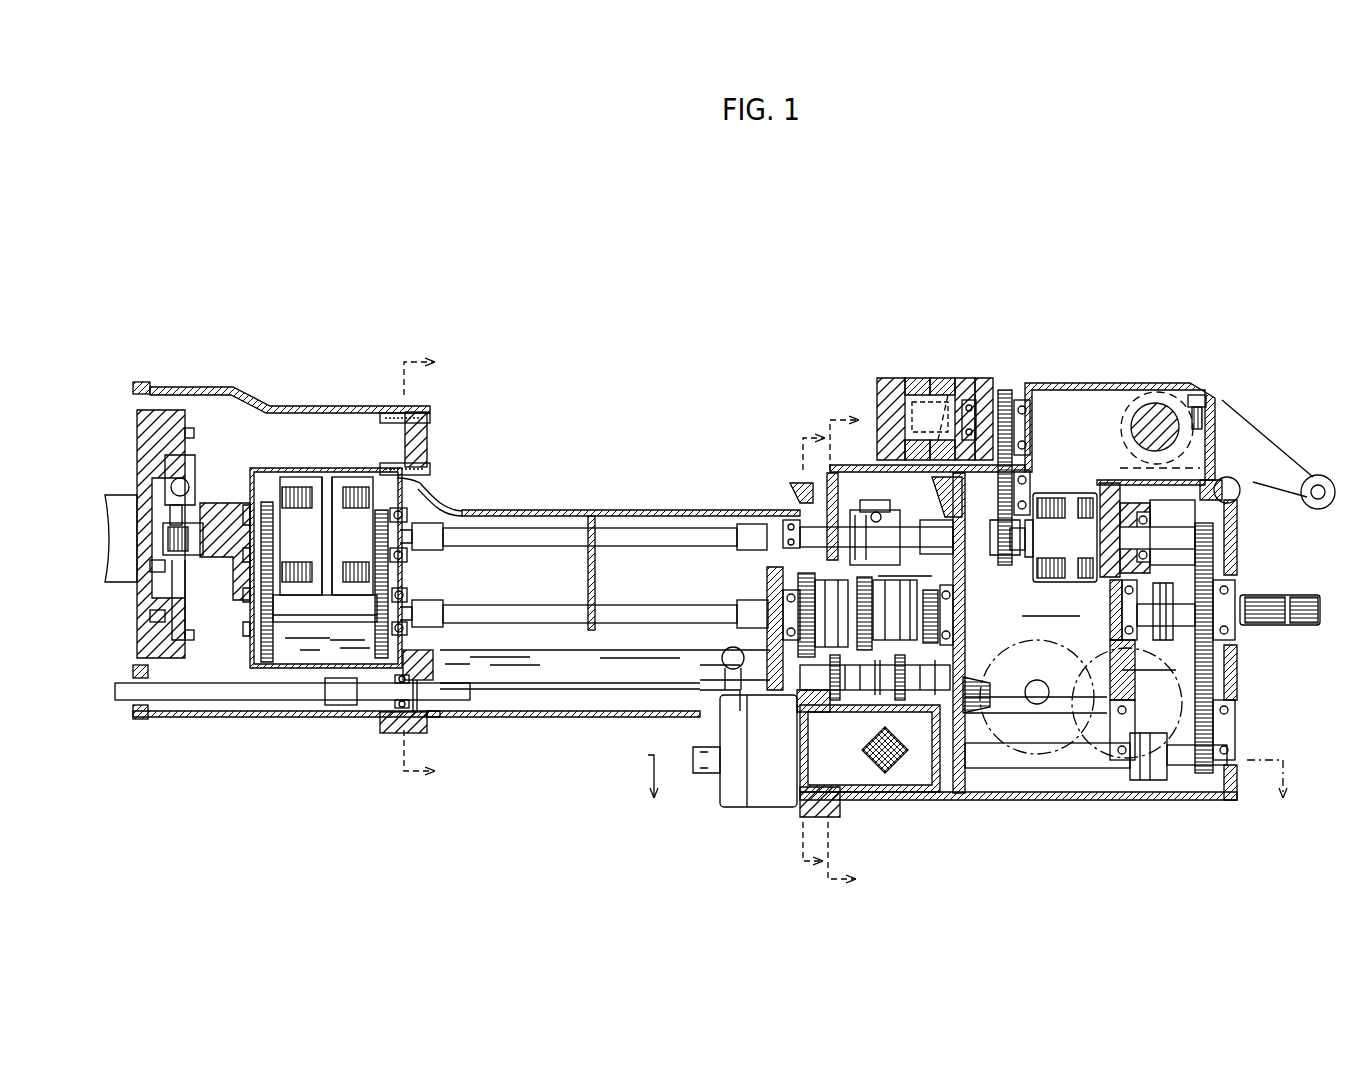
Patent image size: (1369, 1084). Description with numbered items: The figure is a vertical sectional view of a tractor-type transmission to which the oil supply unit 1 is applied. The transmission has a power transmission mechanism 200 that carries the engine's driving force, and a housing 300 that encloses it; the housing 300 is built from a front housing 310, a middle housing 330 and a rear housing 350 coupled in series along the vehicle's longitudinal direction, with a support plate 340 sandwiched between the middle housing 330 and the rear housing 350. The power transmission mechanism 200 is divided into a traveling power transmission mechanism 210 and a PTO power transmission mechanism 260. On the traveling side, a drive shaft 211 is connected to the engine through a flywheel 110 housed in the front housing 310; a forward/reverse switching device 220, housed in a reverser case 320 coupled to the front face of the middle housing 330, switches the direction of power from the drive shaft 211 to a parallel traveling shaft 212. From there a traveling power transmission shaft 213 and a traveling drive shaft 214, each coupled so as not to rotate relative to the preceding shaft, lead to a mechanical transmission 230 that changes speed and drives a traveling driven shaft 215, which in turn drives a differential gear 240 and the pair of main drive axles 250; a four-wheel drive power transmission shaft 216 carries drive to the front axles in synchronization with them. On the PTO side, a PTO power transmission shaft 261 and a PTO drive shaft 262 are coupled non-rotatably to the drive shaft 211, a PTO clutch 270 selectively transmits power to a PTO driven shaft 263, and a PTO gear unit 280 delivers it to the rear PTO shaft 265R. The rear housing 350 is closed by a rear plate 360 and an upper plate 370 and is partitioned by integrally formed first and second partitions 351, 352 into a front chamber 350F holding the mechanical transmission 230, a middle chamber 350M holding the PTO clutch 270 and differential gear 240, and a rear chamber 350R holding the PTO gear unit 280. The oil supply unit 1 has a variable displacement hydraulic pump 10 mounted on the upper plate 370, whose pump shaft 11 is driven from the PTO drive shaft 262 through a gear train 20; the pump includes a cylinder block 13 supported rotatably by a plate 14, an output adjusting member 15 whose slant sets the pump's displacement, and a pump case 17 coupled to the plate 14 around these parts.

The oil supply unit 1 is at (836, 326).
The hydraulic pump 10 is at (1025, 283).
The pump shaft 11 is at (949, 398).
The cylinder block 13 is at (913, 396).
The plate 14 is at (883, 385).
The output adjusting member 15 is at (936, 396).
The pump case 17 is at (976, 396).
The gear train 20 is at (995, 521).
The flywheel 110 is at (152, 446).
The power transmission mechanism 200 is at (448, 521).
The traveling power transmission mechanism 210 is at (572, 633).
The drive shaft 211 is at (205, 520).
The traveling shaft 212 is at (315, 618).
The traveling power transmission shaft 213 is at (488, 616).
The traveling drive shaft 214 is at (773, 610).
The traveling driven shaft 215 is at (983, 692).
The four-wheel drive power transmission shaft 216 is at (590, 692).
The forward/reverse switching device 220 is at (268, 490).
The mechanical transmission 230 is at (832, 543).
The differential gear 240 is at (1093, 801).
The main drive axles 250 is at (1037, 704).
The PTO power transmission mechanism 260 is at (637, 527).
The PTO power transmission shaft 261 is at (500, 535).
The PTO drive shaft 262 is at (800, 527).
The PTO driven shaft 263 is at (1172, 537).
The rear PTO shaft 265R is at (1285, 597).
The PTO clutch 270 is at (1060, 491).
The PTO gear unit 280 is at (1215, 668).
The housing 300 is at (536, 481).
The front housing 310 is at (338, 407).
The reverser case 320 is at (310, 468).
The middle housing 330 is at (674, 510).
The support plate 340 is at (800, 481).
The rear housing 350 is at (1005, 801).
The front chamber 350F is at (875, 623).
The middle chamber 350M is at (1053, 555).
The rear chamber 350R is at (1172, 680).
The first partition 351 is at (948, 792).
The second partition 352 is at (1050, 767).
The rear plate 360 is at (1215, 741).
The upper plate 370 is at (1008, 400).